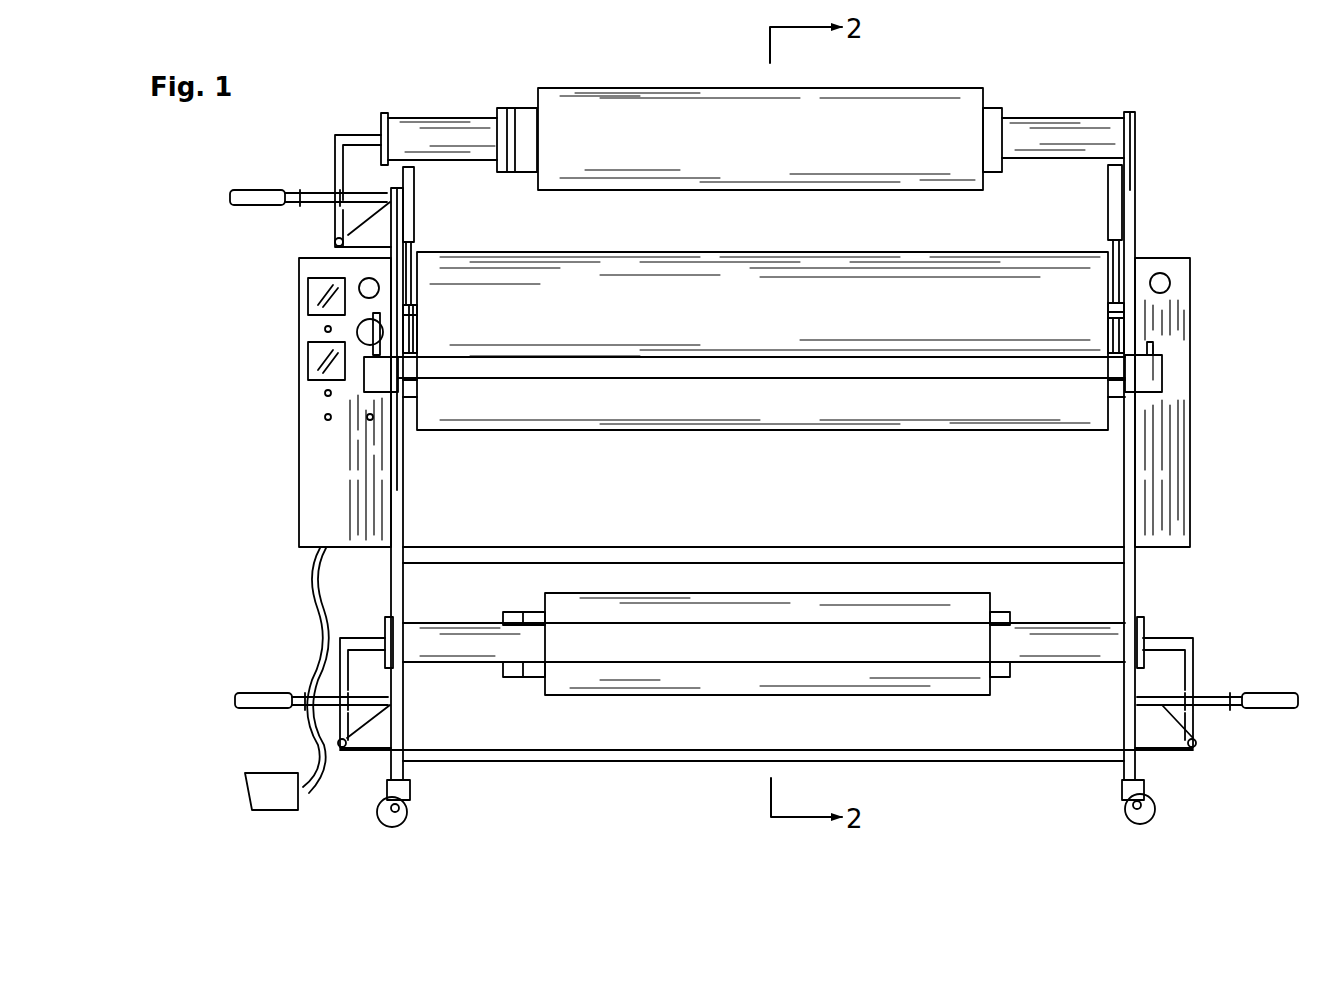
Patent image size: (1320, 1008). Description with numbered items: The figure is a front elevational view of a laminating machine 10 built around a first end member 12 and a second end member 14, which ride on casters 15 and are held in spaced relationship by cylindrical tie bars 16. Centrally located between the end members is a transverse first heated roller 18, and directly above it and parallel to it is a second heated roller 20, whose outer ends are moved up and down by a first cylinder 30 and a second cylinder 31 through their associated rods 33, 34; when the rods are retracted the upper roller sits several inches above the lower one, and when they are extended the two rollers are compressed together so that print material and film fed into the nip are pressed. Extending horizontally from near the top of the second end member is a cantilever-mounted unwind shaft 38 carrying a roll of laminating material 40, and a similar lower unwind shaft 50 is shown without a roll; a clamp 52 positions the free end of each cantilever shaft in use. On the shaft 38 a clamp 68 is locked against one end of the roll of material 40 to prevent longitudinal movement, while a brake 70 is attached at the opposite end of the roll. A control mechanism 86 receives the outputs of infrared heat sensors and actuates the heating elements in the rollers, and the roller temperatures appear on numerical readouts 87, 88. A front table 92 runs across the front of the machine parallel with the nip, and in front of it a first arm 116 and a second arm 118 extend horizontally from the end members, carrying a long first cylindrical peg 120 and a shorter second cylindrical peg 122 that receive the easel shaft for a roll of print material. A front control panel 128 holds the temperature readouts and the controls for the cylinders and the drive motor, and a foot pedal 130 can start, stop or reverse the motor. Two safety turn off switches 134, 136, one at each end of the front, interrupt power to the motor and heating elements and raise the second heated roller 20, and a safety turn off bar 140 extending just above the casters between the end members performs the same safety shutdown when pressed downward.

The laminating machine 10 is at (422, 97).
The first end member 12 is at (395, 760).
The second end member 14 is at (1137, 762).
The casters 15 is at (403, 817).
The tie bars 16 is at (1023, 563).
The first heated roller 18 is at (857, 430).
The second heated roller 20 is at (775, 252).
The first cylinder 30 is at (413, 170).
The second cylinder 31 is at (1108, 213).
The rod 33 is at (413, 248).
The rod 34 is at (1110, 247).
The unwind shaft 38 is at (1102, 118).
The roll of laminating material 40 is at (727, 90).
The lower unwind shaft 50 is at (1098, 663).
The clamp 52 is at (340, 133).
The clamp 68 is at (995, 110).
The brake 70 is at (505, 106).
The control mechanism 86 is at (299, 480).
The numerical readout 87 is at (308, 297).
The numerical readout 88 is at (308, 365).
The front table 92 is at (1080, 382).
The first arm 116 is at (363, 387).
The second arm 118 is at (1157, 397).
The first cylindrical peg 120 is at (357, 333).
The second cylindrical peg 122 is at (1150, 342).
The front control panel 128 is at (300, 547).
The foot pedal 130 is at (243, 780).
The safety turn off switch 134 is at (360, 280).
The safety turn off switch 136 is at (1167, 273).
The safety turn off bar 140 is at (490, 760).